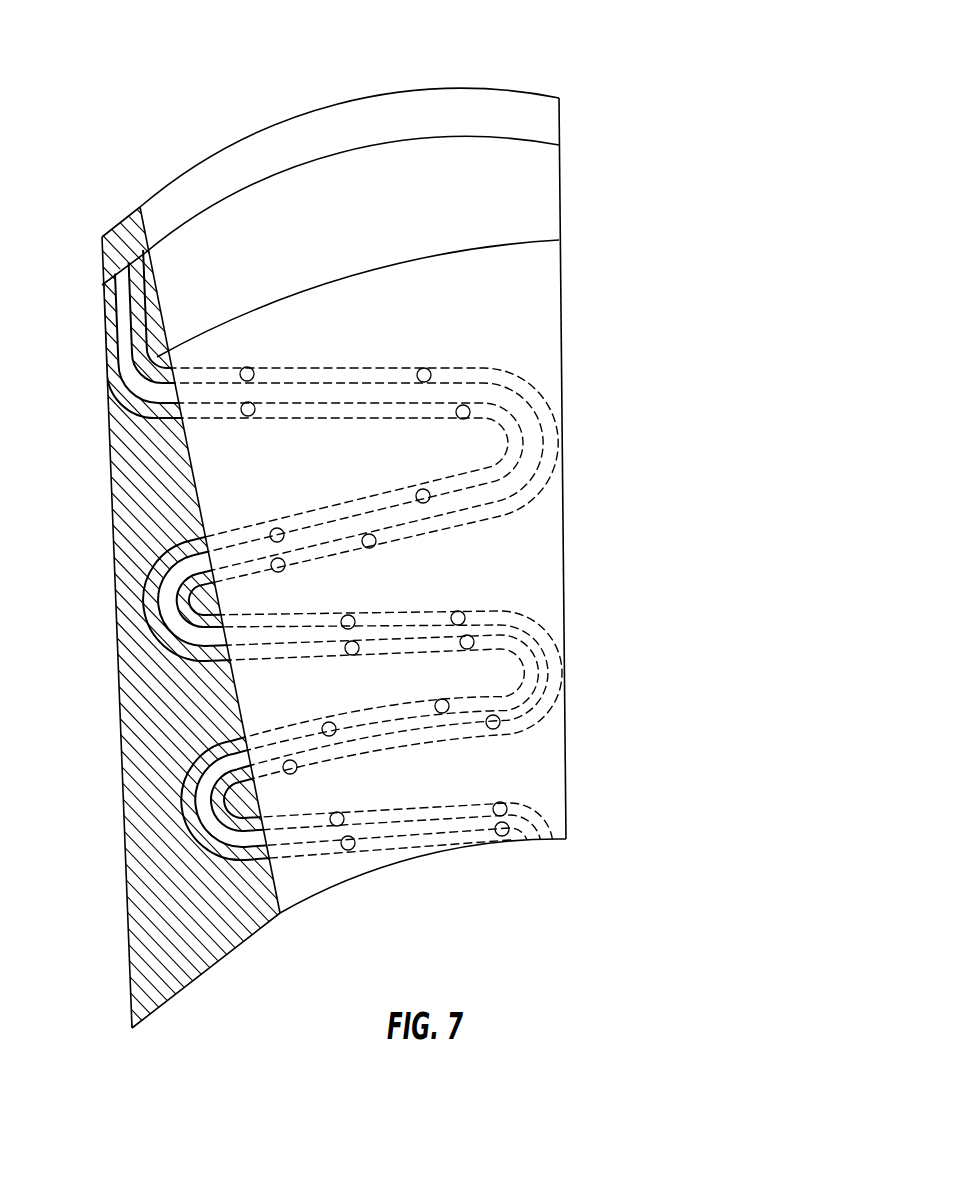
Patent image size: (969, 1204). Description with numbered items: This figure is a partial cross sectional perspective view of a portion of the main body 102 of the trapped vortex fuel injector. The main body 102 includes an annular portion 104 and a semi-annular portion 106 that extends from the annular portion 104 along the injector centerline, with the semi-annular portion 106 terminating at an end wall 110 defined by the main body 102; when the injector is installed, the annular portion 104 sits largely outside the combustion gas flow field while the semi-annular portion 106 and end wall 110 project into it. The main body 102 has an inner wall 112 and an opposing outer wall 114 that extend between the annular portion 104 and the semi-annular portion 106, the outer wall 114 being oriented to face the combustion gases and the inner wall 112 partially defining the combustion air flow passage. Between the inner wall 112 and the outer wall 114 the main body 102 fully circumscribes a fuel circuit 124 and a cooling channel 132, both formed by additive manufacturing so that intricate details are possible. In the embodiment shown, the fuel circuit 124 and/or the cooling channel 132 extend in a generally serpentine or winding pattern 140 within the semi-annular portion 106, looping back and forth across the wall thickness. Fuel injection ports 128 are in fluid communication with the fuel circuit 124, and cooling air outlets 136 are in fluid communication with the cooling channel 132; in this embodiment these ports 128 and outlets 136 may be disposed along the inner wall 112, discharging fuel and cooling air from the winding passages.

The main body 102 is at (633, 147).
The annular portion 104 is at (478, 150).
The semi-annular portion 106 is at (607, 598).
The end wall 110 is at (278, 938).
The inner wall 112 is at (533, 294).
The outer wall 114 is at (118, 628).
The fuel circuit 124 is at (303, 371).
The fuel injection port 128 is at (247, 367).
The cooling channel 132 is at (290, 416).
The cooling air outlet 136 is at (247, 416).
The serpentine or winding pattern 140 is at (420, 331).